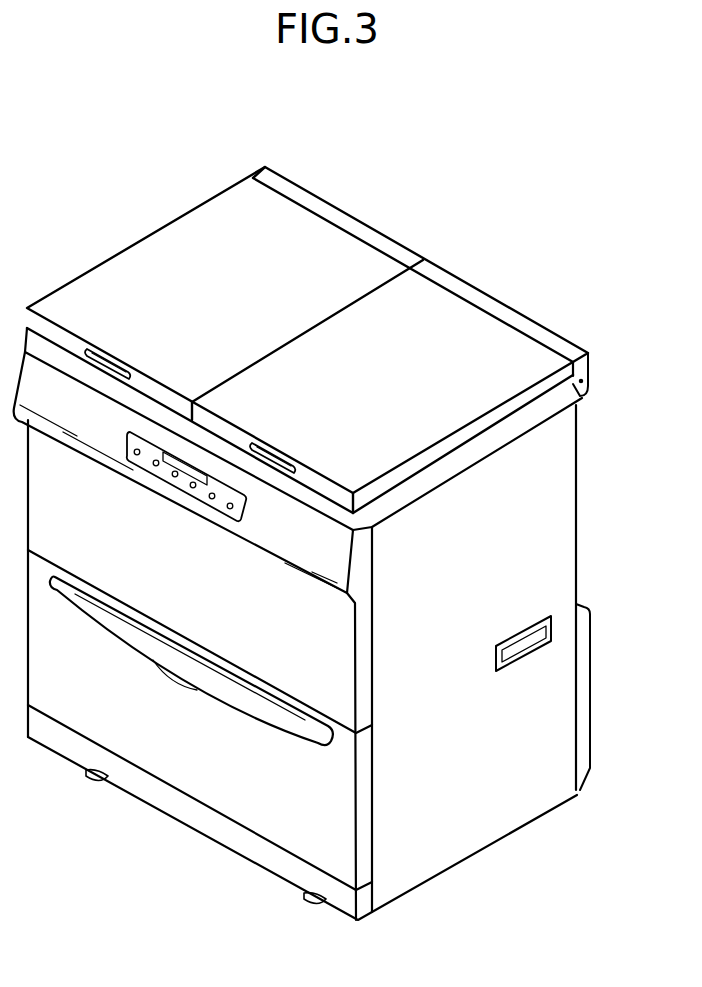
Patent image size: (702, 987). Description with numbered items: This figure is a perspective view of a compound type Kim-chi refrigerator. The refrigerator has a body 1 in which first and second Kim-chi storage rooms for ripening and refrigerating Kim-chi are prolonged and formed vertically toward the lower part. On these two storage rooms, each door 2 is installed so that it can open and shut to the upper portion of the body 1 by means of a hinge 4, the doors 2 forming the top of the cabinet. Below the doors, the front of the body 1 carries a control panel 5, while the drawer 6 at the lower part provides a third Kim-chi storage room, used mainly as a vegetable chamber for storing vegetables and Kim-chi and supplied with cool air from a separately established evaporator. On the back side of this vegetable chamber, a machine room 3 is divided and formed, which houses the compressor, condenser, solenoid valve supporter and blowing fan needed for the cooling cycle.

The body 1 is at (568, 554).
The door 2 is at (507, 347).
The machine room 3 is at (606, 672).
The hinge 4 is at (586, 375).
The control panel 5 is at (195, 493).
The drawer 6 is at (233, 805).